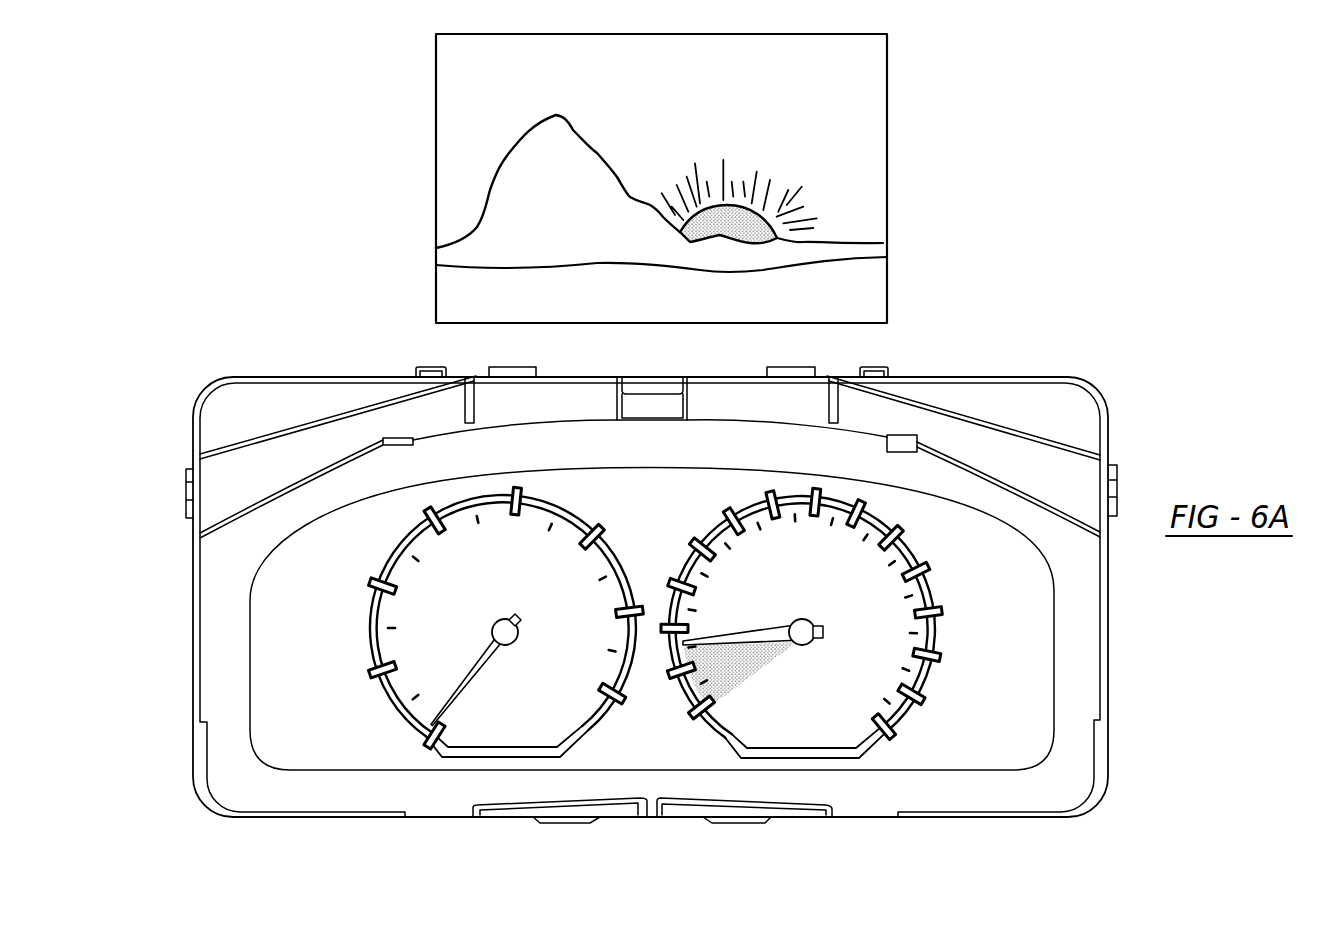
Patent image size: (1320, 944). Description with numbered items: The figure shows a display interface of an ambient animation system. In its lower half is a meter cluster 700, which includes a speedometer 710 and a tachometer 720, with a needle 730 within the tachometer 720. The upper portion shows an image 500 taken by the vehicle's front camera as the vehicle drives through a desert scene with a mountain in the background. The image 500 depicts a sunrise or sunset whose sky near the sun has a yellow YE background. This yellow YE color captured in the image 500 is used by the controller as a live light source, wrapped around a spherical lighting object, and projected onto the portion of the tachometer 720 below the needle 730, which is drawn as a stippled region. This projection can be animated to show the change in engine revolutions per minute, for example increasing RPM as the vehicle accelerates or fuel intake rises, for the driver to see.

The image 500 is at (905, 150).
The meter cluster 700 is at (269, 357).
The speedometer 710 is at (442, 650).
The tachometer 720 is at (877, 671).
The needle 730 is at (725, 640).
The yellow YE is at (808, 203).